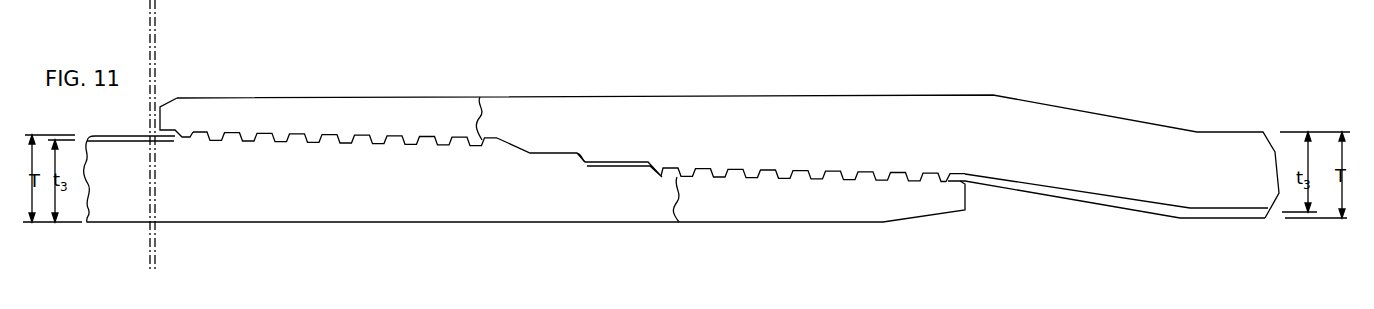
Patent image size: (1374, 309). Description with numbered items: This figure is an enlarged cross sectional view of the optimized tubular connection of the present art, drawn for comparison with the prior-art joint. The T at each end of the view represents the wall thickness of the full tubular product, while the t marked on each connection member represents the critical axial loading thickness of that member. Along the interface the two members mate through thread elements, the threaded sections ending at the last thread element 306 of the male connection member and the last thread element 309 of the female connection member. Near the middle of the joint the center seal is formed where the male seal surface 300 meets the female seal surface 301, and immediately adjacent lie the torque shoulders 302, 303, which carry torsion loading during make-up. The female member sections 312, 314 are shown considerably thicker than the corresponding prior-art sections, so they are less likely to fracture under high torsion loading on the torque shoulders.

The center seal surface of the male connection member 300 is at (577, 157).
The center seal surface of the female connection member 301 is at (577, 153).
The torque shoulder 302 is at (582, 164).
The torque shoulder 303 is at (591, 158).
The last thread element of the male connection member 306 is at (214, 141).
The last thread element of the female connection member 309 is at (916, 178).
The female connection member section 312 is at (472, 118).
The female connection member section 314 is at (700, 199).